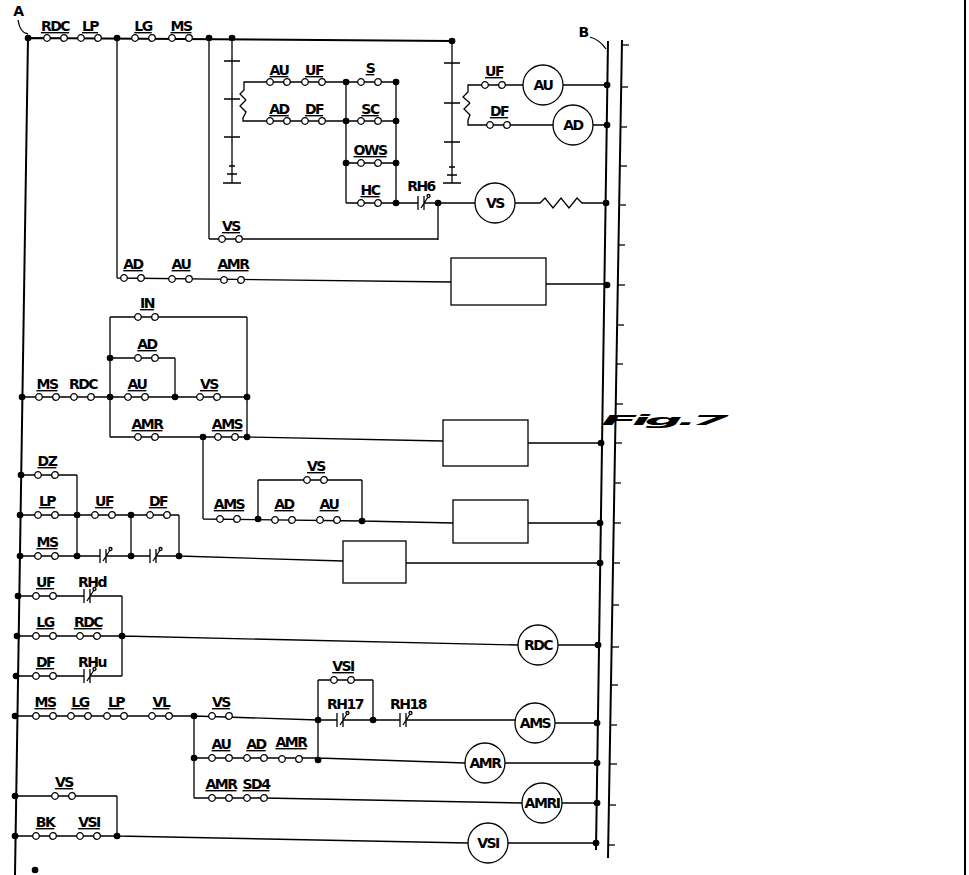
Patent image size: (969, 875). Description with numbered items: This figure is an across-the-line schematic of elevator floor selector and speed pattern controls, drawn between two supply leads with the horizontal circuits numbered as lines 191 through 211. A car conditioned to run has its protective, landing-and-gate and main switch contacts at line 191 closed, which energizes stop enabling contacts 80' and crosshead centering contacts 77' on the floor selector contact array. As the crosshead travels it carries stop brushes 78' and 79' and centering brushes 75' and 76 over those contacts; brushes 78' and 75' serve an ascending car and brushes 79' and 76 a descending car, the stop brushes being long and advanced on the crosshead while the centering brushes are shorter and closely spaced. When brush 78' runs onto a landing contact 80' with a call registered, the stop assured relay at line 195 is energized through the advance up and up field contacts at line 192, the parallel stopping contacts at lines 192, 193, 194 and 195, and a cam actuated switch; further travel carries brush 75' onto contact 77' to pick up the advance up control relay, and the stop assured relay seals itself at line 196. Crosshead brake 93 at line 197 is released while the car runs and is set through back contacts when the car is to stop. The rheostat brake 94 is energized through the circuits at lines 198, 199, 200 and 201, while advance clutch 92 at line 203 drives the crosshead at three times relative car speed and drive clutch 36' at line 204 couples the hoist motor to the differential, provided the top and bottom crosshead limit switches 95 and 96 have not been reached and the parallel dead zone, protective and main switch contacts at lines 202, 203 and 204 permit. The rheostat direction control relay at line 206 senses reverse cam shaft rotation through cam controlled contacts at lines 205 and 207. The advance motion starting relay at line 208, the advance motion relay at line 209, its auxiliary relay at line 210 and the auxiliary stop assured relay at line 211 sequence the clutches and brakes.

The drive clutch 36' is at (391, 556).
The centering brush 75' is at (467, 85).
The centering brush 76 is at (476, 126).
The crosshead centering contact 77' is at (437, 112).
The stop brush 78' is at (249, 80).
The stop brush 79' is at (259, 122).
The stop enabling contact 80' is at (204, 110).
The advance clutch 92 is at (528, 504).
The crosshead brake 93 is at (554, 250).
The rheostat brake 94 is at (528, 424).
The crosshead limit switch 95 is at (106, 545).
The crosshead limit switch 96 is at (156, 545).
The line 191 is at (644, 45).
The line 192 is at (720, 99).
The line 193 is at (724, 127).
The line 194 is at (642, 166).
The line 195 is at (723, 217).
The line 196 is at (640, 245).
The line 197 is at (640, 285).
The line 198 is at (639, 325).
The line 199 is at (638, 364).
The line 200 is at (638, 404).
The line 201 is at (637, 443).
The line 202 is at (636, 483).
The line 203 is at (636, 523).
The line 204 is at (635, 563).
The line 205 is at (634, 605).
The line 206 is at (721, 647).
The line 207 is at (633, 685).
The line 208 is at (686, 725).
The line 209 is at (714, 775).
The line 210 is at (695, 805).
The line 211 is at (675, 845).